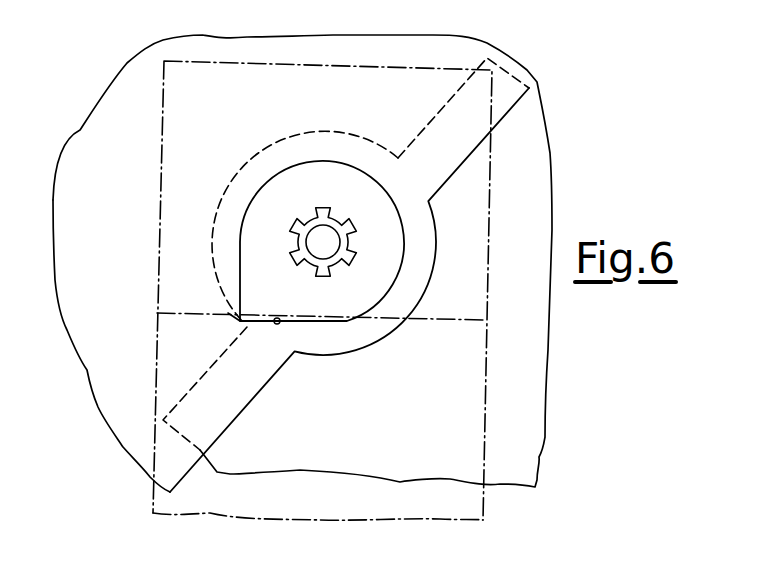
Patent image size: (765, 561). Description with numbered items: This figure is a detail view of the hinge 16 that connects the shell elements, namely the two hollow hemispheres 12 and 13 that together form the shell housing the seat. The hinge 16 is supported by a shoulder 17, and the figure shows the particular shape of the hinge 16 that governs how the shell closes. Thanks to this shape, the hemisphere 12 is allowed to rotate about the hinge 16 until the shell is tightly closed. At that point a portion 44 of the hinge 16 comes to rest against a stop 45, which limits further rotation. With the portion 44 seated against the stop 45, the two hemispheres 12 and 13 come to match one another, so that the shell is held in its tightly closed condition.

The hollow hemisphere 12 is at (503, 108).
The hollow hemisphere 13 is at (530, 438).
The hinge 16 is at (238, 270).
The shoulder 17 is at (473, 500).
The portion of the hinge 44 is at (245, 300).
The stop 45 is at (277, 325).